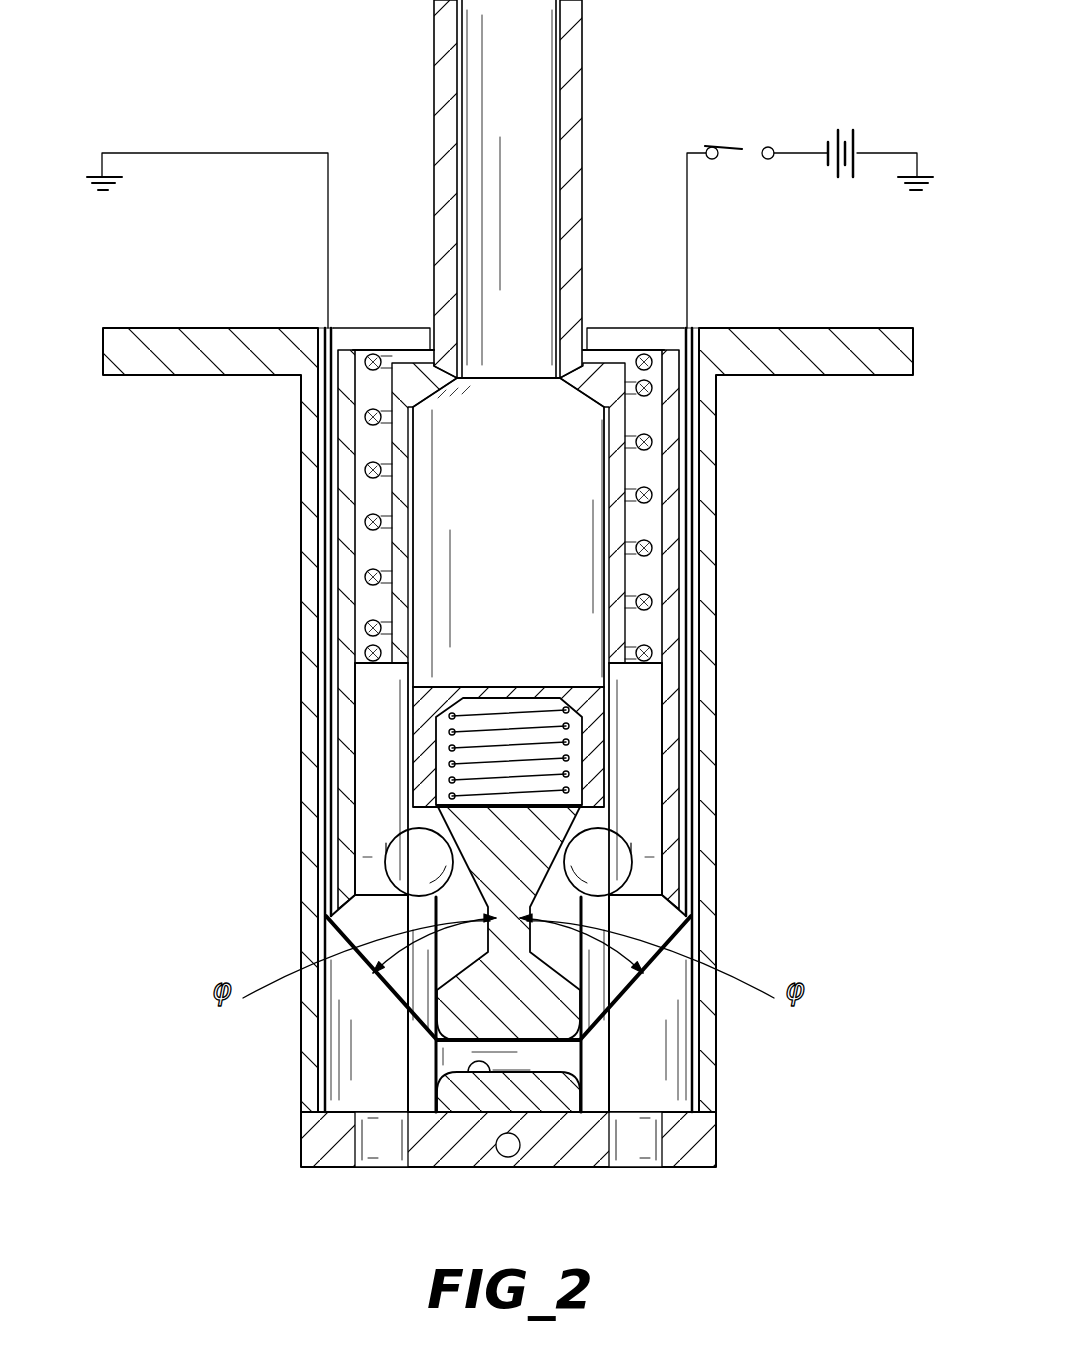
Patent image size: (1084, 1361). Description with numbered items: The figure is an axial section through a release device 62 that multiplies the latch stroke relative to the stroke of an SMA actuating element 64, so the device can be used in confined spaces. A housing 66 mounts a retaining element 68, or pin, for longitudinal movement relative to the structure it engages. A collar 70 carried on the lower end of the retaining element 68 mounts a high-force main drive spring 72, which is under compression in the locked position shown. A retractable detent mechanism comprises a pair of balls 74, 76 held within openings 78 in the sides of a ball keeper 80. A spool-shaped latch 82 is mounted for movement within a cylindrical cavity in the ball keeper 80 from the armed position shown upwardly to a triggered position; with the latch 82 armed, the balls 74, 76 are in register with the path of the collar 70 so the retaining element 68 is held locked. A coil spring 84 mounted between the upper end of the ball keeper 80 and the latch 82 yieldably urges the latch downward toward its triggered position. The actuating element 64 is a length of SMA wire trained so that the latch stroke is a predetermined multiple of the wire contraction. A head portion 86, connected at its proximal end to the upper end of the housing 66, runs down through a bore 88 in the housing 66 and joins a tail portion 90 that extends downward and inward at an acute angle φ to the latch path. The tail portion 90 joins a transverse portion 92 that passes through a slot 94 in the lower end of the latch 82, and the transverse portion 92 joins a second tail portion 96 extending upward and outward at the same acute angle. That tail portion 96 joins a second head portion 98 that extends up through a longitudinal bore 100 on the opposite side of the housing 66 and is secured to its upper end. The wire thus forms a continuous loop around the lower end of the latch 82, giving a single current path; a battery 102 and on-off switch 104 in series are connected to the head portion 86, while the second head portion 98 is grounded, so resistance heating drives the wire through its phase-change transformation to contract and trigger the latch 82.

The release device 62 is at (280, 848).
The SMA actuating element 64 is at (699, 722).
The housing 66 is at (310, 560).
The retaining element 68 is at (443, 123).
The collar 70 is at (375, 733).
The main drive spring 72 is at (652, 548).
The ball 74 is at (407, 840).
The ball 76 is at (610, 840).
The openings 78 is at (633, 857).
The ball keeper 80 is at (427, 1053).
The spool-shaped latch 82 is at (610, 1037).
The coil spring 84 is at (502, 737).
The head portion 86 is at (690, 442).
The bore 88 is at (697, 355).
The tail portion 90 is at (629, 984).
The transverse portion 92 is at (553, 1047).
The slot 94 is at (480, 1062).
The second tail portion 96 is at (388, 984).
The second head portion 98 is at (328, 442).
The longitudinal bore 100 is at (313, 357).
The battery 102 is at (835, 135).
The on-off switch 104 is at (740, 147).